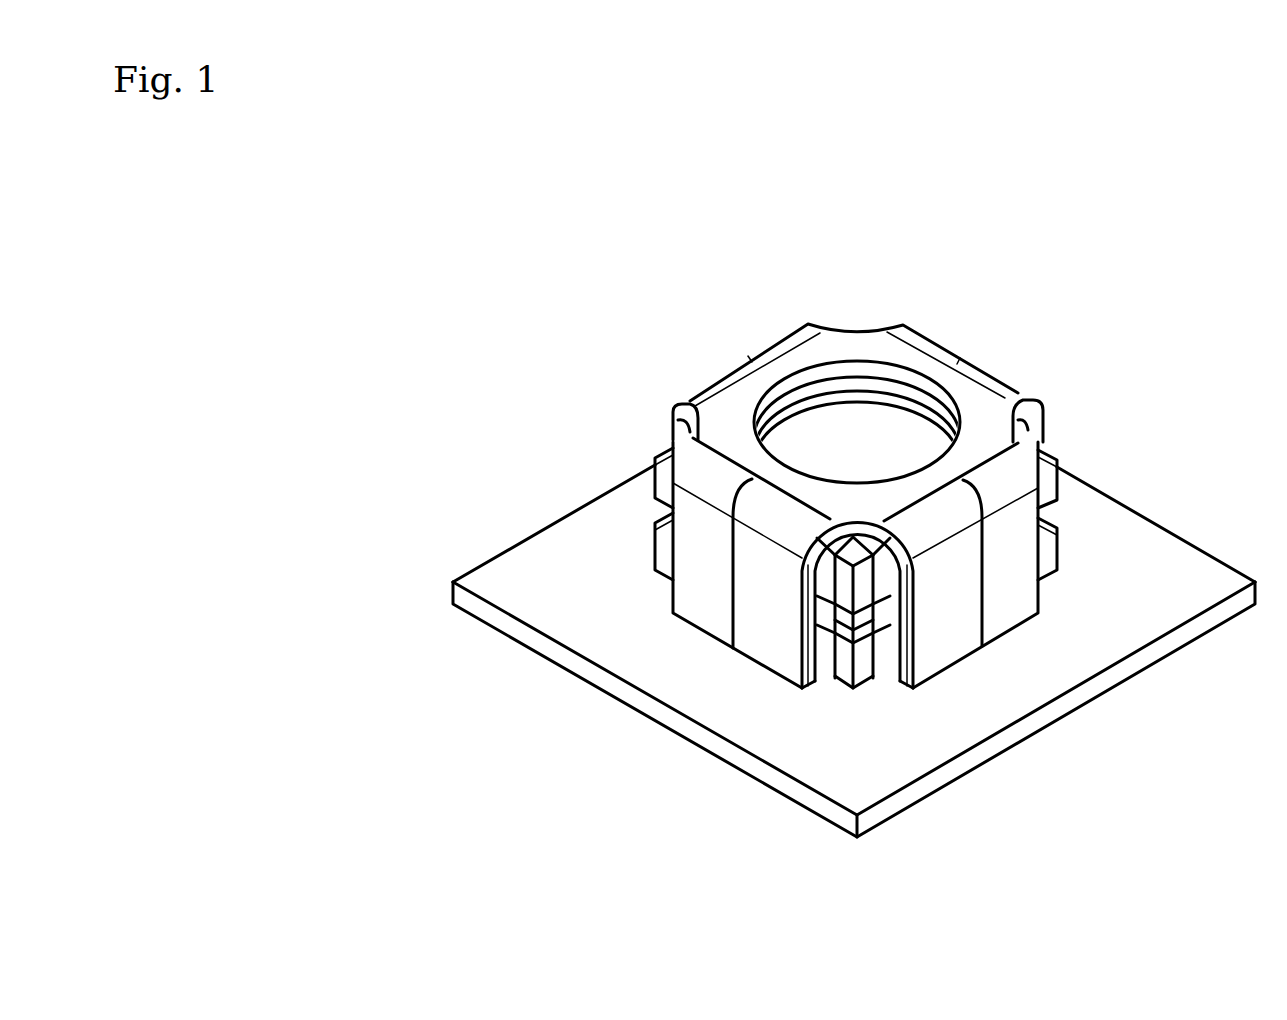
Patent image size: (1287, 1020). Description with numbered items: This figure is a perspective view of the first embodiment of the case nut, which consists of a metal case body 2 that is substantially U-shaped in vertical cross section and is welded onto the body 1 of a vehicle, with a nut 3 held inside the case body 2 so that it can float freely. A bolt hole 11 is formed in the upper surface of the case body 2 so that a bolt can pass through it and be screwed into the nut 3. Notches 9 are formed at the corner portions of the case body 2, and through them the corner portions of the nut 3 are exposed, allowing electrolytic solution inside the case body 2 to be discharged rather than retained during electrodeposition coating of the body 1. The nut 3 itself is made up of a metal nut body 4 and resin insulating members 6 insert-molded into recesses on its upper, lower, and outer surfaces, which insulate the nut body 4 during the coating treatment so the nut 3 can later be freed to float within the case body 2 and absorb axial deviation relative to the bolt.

The body 1 is at (1148, 545).
The case body 2 is at (847, 347).
The nut 3 is at (838, 692).
The nut body 4 is at (862, 662).
The insulating members 6 is at (823, 641).
The notches 9 is at (680, 428).
The bolt hole 11 is at (905, 382).